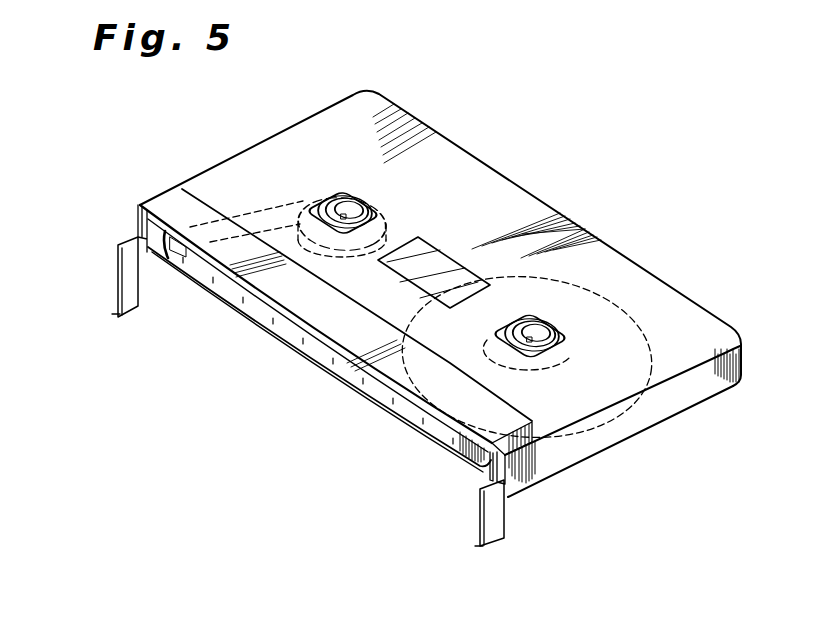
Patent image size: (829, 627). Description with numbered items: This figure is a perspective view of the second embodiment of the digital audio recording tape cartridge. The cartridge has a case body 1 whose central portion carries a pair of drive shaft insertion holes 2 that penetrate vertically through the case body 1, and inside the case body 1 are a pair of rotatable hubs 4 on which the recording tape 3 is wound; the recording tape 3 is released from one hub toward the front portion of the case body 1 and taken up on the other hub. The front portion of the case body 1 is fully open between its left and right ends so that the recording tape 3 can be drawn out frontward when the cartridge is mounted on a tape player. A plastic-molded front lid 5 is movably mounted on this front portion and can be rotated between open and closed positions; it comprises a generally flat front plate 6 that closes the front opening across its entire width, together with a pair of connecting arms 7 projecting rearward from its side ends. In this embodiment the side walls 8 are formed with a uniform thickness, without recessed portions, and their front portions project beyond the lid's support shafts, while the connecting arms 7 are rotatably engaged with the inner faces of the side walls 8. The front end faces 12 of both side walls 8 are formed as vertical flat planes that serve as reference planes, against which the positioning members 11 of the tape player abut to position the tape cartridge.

The case body 1 is at (521, 183).
The drive shaft insertion holes 2 is at (345, 215).
The recording tape 3 is at (250, 314).
The rotatable hubs 4 is at (386, 230).
The front lid 5 is at (366, 307).
The front plate 6 is at (338, 295).
The connecting arms 7 is at (138, 216).
The side walls 8 is at (588, 446).
The positioning member 11 is at (42, 298).
The front end faces 12 is at (508, 470).